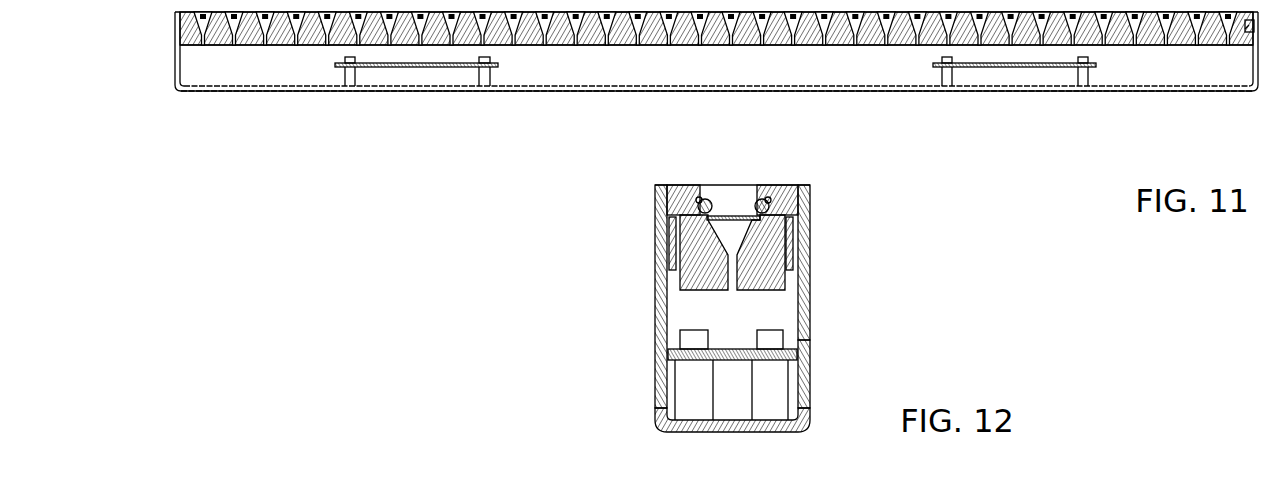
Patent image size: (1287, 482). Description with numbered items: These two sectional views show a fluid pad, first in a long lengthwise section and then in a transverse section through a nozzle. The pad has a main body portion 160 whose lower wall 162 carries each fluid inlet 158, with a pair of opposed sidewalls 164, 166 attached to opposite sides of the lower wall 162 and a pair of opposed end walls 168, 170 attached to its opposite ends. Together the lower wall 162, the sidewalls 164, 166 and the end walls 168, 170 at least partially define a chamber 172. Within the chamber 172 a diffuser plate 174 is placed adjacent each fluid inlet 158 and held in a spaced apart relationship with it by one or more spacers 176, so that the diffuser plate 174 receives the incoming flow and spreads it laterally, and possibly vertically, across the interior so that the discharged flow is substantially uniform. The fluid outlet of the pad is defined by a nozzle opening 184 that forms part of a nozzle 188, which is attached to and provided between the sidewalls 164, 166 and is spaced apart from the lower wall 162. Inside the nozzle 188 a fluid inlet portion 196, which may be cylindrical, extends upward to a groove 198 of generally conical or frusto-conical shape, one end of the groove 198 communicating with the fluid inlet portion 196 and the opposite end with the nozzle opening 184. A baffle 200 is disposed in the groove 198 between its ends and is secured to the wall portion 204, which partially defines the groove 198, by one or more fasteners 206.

In FIG. 11, the fluid inlet 158 is at (385, 88).
In FIG. 11, the main body portion 160 is at (1172, 92).
In FIG. 12, the main body portion 160 is at (804, 378).
In FIG. 12, the lower wall 162 is at (805, 431).
In FIG. 12, the sidewall 164 is at (805, 313).
In FIG. 12, the sidewall 166 is at (658, 301).
In FIG. 11, the end wall 168 is at (178, 63).
In FIG. 11, the end wall 170 is at (1262, 75).
In FIG. 11, the chamber 172 is at (705, 76).
In FIG. 12, the chamber 172 is at (748, 324).
In FIG. 11, the diffuser plate 174 is at (415, 67).
In FIG. 12, the diffuser plate 174 is at (797, 356).
In FIG. 11, the spacer 176 is at (336, 88).
In FIG. 12, the spacer 176 is at (780, 398).
In FIG. 12, the nozzle opening 184 is at (758, 192).
In FIG. 11, the nozzle 188 is at (716, 22).
In FIG. 12, the nozzle 188 is at (780, 256).
In FIG. 12, the fluid inlet portion 196 is at (672, 278).
In FIG. 12, the groove 198 is at (788, 217).
In FIG. 12, the baffle 200 is at (718, 213).
In FIG. 12, the wall portion 204 is at (683, 186).
In FIG. 12, the fastener 206 is at (786, 234).